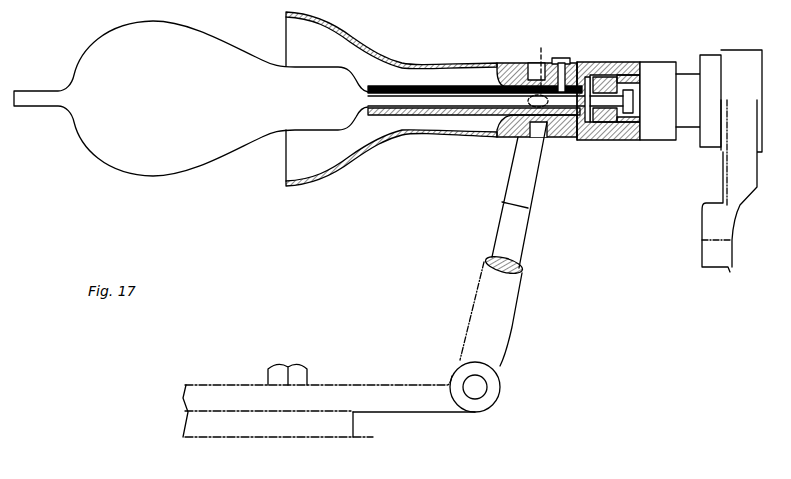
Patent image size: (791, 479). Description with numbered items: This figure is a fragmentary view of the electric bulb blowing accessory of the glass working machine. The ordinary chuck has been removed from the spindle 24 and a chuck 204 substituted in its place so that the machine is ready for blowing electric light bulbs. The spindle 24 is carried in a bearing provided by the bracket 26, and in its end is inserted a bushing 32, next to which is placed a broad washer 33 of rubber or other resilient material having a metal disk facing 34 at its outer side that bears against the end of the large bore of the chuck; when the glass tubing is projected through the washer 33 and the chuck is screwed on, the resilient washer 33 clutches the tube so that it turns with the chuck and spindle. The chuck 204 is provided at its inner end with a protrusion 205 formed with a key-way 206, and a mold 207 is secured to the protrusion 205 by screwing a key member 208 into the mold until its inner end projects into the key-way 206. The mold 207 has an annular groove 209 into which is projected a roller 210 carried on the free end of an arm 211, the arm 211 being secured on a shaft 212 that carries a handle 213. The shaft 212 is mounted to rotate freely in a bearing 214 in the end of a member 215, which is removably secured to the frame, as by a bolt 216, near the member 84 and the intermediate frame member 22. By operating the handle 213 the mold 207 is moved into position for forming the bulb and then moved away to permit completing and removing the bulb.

The mold 207 is at (343, 34).
The key-way 206 is at (475, 81).
The protrusion 205 is at (380, 118).
The annular groove 209 is at (536, 63).
The roller 210 is at (545, 47).
The key member 208 is at (566, 57).
The chuck 204 is at (605, 101).
The spindle 24 is at (685, 76).
The metal disk facing 34 is at (580, 141).
The washer 33 is at (588, 141).
The bushing 32 is at (613, 141).
The arm 211 is at (527, 174).
The bracket 26 is at (727, 184).
The handle 213 is at (502, 315).
The shaft 212 is at (482, 389).
The bearing 214 is at (500, 412).
The bolt 216 is at (291, 364).
The member 215 is at (364, 388).
The member 84 is at (345, 425).
The intermediate frame member 22 is at (370, 445).